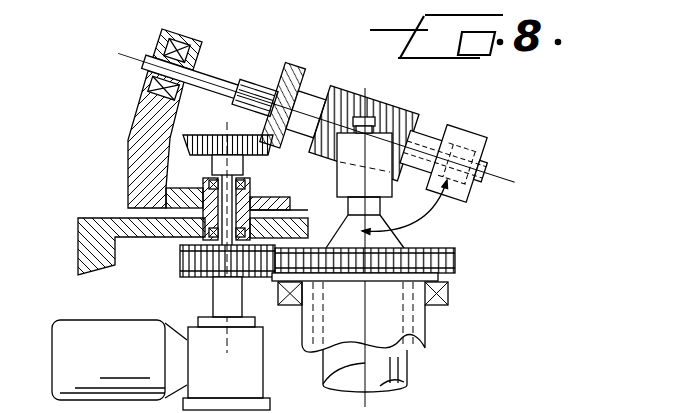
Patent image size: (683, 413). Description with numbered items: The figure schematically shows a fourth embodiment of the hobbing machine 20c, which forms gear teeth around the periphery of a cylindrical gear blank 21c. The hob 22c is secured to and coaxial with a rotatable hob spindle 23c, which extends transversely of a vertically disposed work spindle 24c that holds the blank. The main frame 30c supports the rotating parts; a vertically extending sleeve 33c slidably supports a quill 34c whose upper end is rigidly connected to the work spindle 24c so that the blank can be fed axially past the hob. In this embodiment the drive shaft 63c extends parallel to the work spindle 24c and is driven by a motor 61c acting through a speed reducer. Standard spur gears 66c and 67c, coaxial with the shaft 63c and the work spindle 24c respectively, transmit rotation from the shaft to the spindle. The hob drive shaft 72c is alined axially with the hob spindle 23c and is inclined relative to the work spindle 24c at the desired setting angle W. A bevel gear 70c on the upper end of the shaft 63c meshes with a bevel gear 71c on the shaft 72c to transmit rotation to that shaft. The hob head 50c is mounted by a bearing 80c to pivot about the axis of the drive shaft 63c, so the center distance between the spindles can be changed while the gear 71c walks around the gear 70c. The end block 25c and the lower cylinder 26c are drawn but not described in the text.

The hobbing machine 20c is at (483, 118).
The gear blank 21c is at (367, 147).
The hob 22c is at (371, 101).
The hob spindle 23c is at (318, 88).
The work spindle 24c is at (335, 215).
The end bearing block 25c is at (500, 173).
The cylinder 26c is at (362, 377).
The main frame 30c is at (80, 247).
The sleeve 33c is at (426, 323).
The quill 34c is at (408, 362).
The hob head 50c is at (127, 147).
The motor 61c is at (70, 328).
The drive shaft 63c is at (220, 238).
The spur gear 66c is at (195, 271).
The spur gear 67c is at (455, 252).
The bevel gear 70c is at (183, 139).
The bevel gear 71c is at (295, 62).
The hob drive shaft 72c is at (208, 72).
The bearing 80c is at (198, 208).
The setting angle W is at (410, 207).